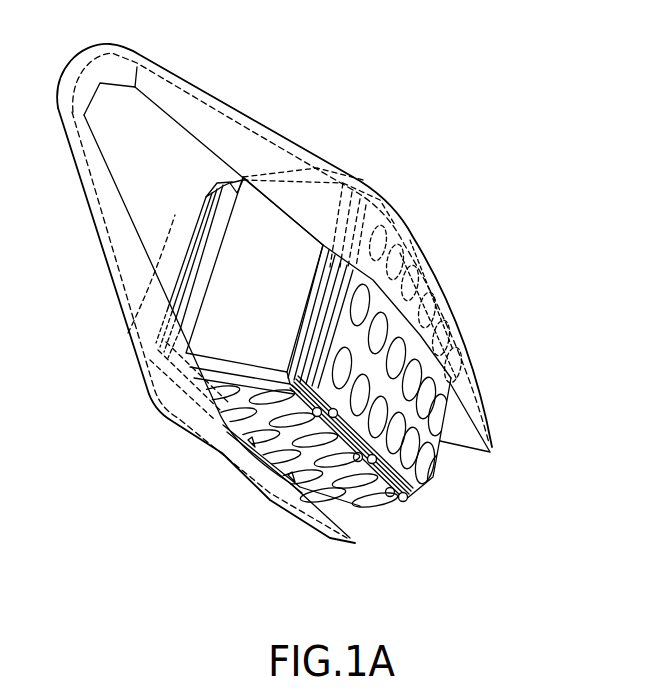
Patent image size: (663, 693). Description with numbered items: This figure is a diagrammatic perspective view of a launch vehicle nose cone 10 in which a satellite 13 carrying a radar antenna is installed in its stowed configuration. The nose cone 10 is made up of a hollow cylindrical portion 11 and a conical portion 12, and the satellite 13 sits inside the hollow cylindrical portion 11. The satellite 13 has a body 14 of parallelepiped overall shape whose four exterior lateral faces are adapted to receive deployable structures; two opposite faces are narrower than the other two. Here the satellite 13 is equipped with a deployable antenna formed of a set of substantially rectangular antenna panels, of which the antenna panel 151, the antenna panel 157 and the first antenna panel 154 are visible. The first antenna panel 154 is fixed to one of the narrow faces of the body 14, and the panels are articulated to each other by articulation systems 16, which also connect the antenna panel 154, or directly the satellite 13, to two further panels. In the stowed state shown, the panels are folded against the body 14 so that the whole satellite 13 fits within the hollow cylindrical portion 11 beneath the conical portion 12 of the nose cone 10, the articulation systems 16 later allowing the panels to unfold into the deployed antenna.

The launch vehicle nose cone 10 is at (250, 117).
The conical portion 12 is at (171, 73).
The satellite 13 is at (183, 181).
The body 14 is at (265, 250).
The antenna panel 151 is at (192, 243).
The hollow cylindrical portion 11 is at (463, 337).
The articulation systems 16 is at (425, 498).
The antenna panel 157 is at (433, 452).
The first antenna panel 154 is at (363, 513).